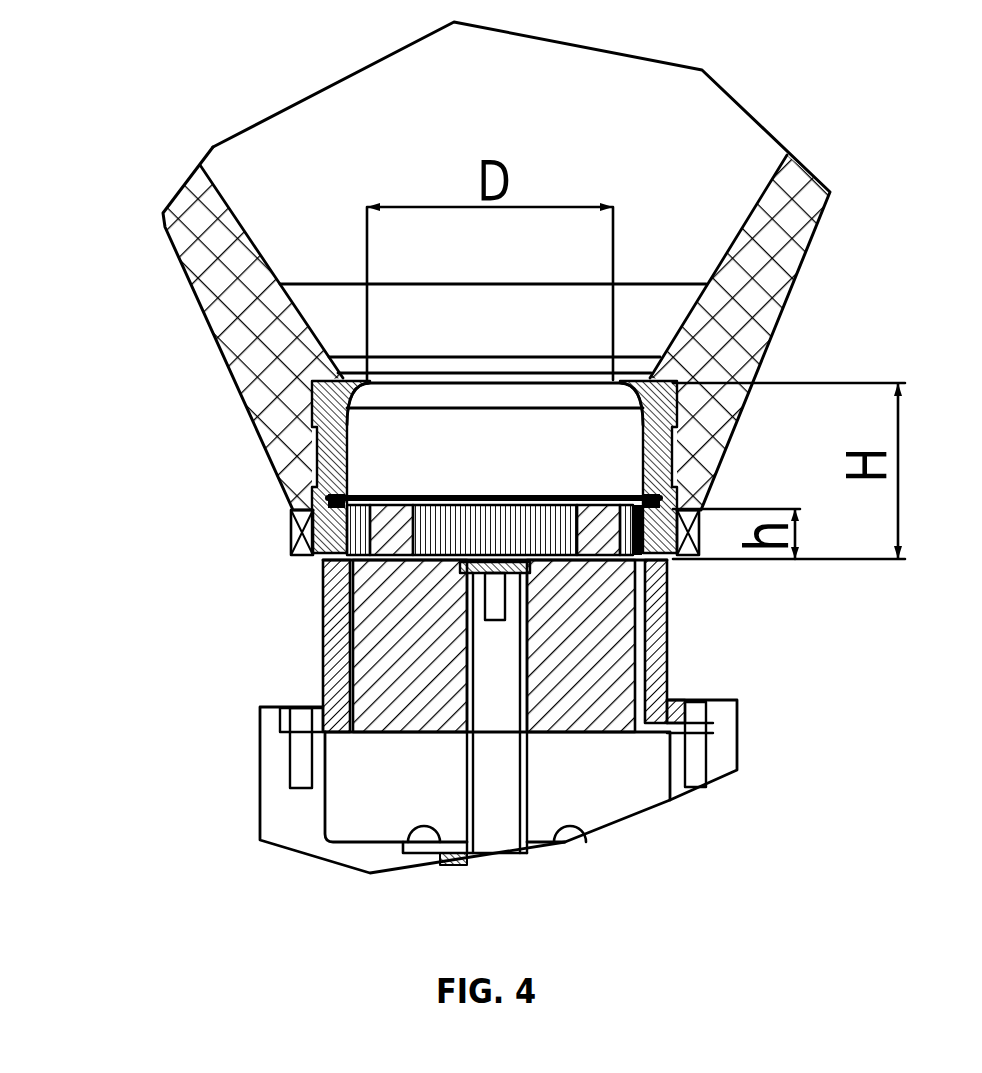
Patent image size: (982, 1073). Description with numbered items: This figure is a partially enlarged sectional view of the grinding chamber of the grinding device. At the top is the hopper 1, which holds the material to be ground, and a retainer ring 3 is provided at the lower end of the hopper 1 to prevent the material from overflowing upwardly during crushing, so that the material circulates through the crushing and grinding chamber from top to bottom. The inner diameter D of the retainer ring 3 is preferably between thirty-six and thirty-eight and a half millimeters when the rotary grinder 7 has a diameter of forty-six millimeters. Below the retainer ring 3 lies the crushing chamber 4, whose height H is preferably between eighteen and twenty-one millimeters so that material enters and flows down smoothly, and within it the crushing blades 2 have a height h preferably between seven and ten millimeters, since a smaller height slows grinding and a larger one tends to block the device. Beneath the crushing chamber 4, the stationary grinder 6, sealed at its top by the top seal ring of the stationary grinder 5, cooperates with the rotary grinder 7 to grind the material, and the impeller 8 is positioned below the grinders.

The hopper 1 is at (238, 300).
The crushing blade 2 is at (600, 516).
The retainer ring 3 is at (372, 445).
The crushing chamber 4 is at (312, 443).
The top seal ring of the stationary grinder 5 is at (293, 510).
The stationary grinder 6 is at (323, 630).
The rotary grinder 7 is at (387, 682).
The impeller 8 is at (378, 807).